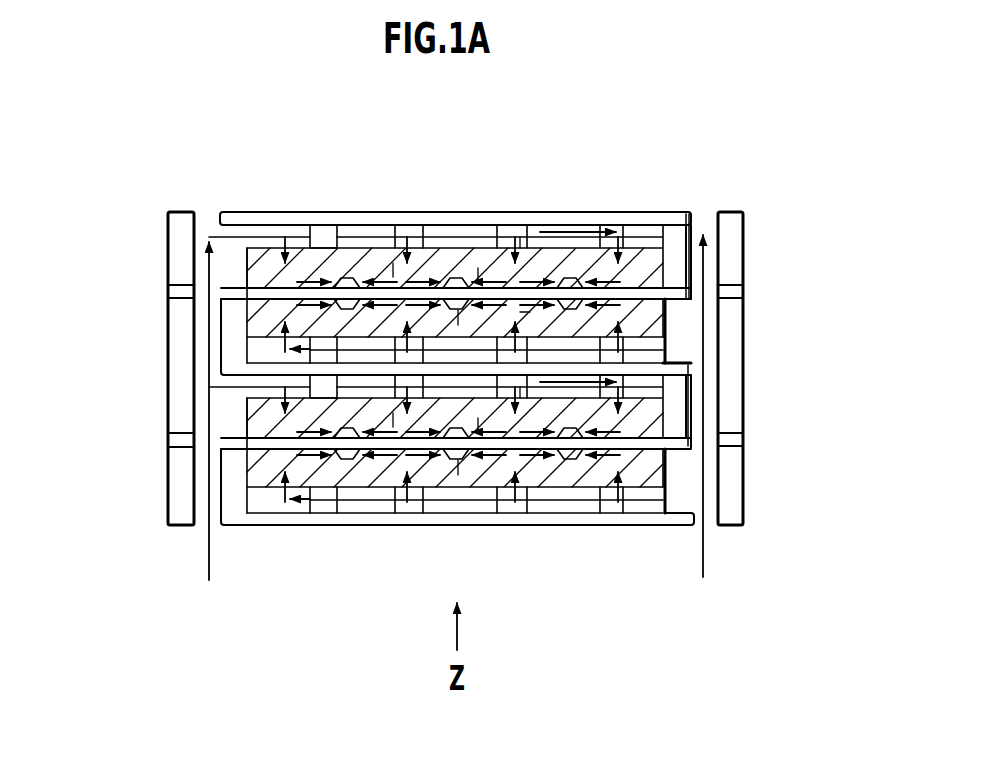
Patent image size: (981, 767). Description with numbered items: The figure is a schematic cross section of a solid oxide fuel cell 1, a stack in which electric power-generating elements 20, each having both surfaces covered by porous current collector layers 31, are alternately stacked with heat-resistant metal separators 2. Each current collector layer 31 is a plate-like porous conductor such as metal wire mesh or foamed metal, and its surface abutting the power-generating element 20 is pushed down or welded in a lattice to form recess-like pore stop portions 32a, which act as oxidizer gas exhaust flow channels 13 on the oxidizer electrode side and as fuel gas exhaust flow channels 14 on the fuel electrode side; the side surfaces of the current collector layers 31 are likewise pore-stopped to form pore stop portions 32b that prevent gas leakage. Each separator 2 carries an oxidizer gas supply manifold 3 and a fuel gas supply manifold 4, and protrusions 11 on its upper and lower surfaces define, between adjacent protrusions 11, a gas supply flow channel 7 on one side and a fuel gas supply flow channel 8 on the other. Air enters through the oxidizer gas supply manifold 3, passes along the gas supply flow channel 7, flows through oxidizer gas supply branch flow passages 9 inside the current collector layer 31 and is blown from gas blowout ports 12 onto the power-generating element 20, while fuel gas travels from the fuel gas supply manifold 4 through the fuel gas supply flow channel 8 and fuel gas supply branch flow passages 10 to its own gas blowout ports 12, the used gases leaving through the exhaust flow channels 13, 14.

The solid oxide fuel cell 1 is at (132, 393).
The separator 2 is at (577, 212).
The oxidizer gas supply manifold 3 is at (196, 534).
The fuel gas supply manifold 4 is at (718, 546).
The gas supply flow channel 7 is at (441, 236).
The fuel gas supply flow channel 8 is at (567, 345).
The oxidizer gas supply branch flow passage 9 is at (524, 246).
The fuel gas supply branch flow passage 10 is at (520, 312).
The protrusion 11 is at (342, 226).
The gas blowout port 12 is at (400, 268).
The oxidizer gas exhaust flow channel 13 is at (478, 275).
The fuel gas exhaust flow channel 14 is at (458, 320).
The electric power-generating element 20 is at (222, 291).
The current collector layer 31 is at (393, 277).
The pore stop portion 32a is at (453, 275).
The pore stop portion 32b is at (246, 272).